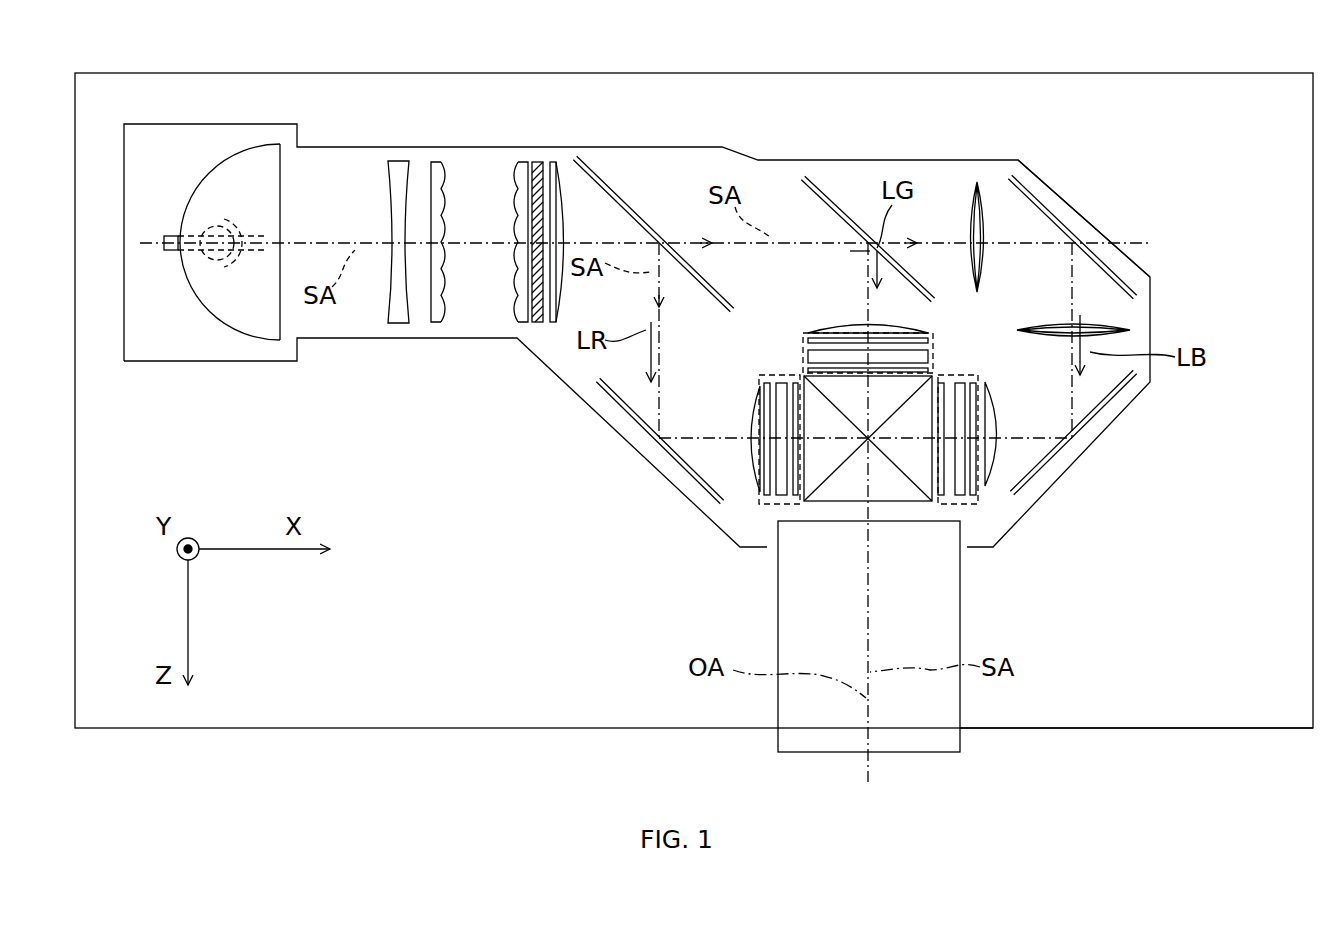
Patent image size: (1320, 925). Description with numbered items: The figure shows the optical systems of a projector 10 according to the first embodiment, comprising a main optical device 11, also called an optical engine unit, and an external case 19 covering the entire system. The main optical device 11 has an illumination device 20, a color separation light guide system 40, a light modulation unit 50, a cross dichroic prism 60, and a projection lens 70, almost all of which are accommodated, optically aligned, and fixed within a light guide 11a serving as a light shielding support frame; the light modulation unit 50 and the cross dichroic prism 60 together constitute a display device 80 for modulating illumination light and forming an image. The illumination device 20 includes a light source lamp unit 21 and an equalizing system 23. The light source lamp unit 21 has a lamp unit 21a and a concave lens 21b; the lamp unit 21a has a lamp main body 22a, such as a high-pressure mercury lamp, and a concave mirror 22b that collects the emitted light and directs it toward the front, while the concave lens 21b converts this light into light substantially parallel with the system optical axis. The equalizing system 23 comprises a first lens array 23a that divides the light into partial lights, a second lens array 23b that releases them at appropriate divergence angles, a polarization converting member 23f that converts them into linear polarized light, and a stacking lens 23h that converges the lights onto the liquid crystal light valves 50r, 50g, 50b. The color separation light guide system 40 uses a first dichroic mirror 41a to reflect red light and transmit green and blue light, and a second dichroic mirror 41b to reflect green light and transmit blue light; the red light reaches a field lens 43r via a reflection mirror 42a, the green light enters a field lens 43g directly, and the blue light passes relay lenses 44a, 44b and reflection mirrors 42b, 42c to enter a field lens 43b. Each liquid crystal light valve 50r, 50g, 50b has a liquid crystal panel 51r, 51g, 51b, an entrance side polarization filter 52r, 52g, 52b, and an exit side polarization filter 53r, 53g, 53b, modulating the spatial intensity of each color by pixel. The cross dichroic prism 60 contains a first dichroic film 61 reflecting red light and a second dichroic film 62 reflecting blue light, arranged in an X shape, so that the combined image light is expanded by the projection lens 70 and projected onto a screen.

The projector 10 is at (1154, 33).
The main optical device 11 is at (637, 288).
The light guide 11a is at (1050, 200).
The external case 19 is at (1040, 730).
The illumination device 20 is at (255, 216).
The light source lamp unit 21 is at (279, 244).
The lamp unit 21a is at (282, 205).
The concave lens 21b is at (398, 325).
The lamp main body 22a is at (202, 258).
The concave mirror 22b is at (228, 168).
The equalizing system 23 is at (514, 269).
The first lens array 23a is at (440, 163).
The second lens array 23b is at (523, 162).
The polarization converting member 23f is at (538, 325).
The stacking lens 23h is at (560, 163).
The color separation light guide system 40 is at (877, 266).
The first dichroic mirror 41a is at (622, 165).
The second dichroic mirror 41b is at (825, 195).
The reflection mirror 42a is at (628, 408).
The reflection mirror 42b is at (1090, 250).
The reflection mirror 42c is at (1110, 432).
The field lens 43r is at (748, 455).
The field lens 43g is at (848, 338).
The field lens 43b is at (1003, 455).
The relay lens 44a is at (972, 185).
The relay lens 44b is at (1132, 330).
The light modulation unit 50 is at (859, 444).
The liquid crystal light valve 50r is at (689, 456).
The liquid crystal light valve 50g is at (863, 311).
The liquid crystal light valve 50b is at (1038, 475).
The liquid crystal panel 51r is at (780, 463).
The liquid crystal panel 51g is at (905, 350).
The liquid crystal panel 51b is at (960, 470).
The entrance side polarization filter 52r is at (764, 428).
The entrance side polarization filter 52g is at (822, 340).
The entrance side polarization filter 52b is at (974, 393).
The exit side polarization filter 53r is at (795, 428).
The exit side polarization filter 53g is at (840, 370).
The exit side polarization filter 53b is at (941, 388).
The cross dichroic prism 60 is at (905, 507).
The first dichroic film 61 is at (903, 472).
The second dichroic film 62 is at (842, 468).
The projection lens 70 is at (925, 720).
The display device 80 is at (775, 512).